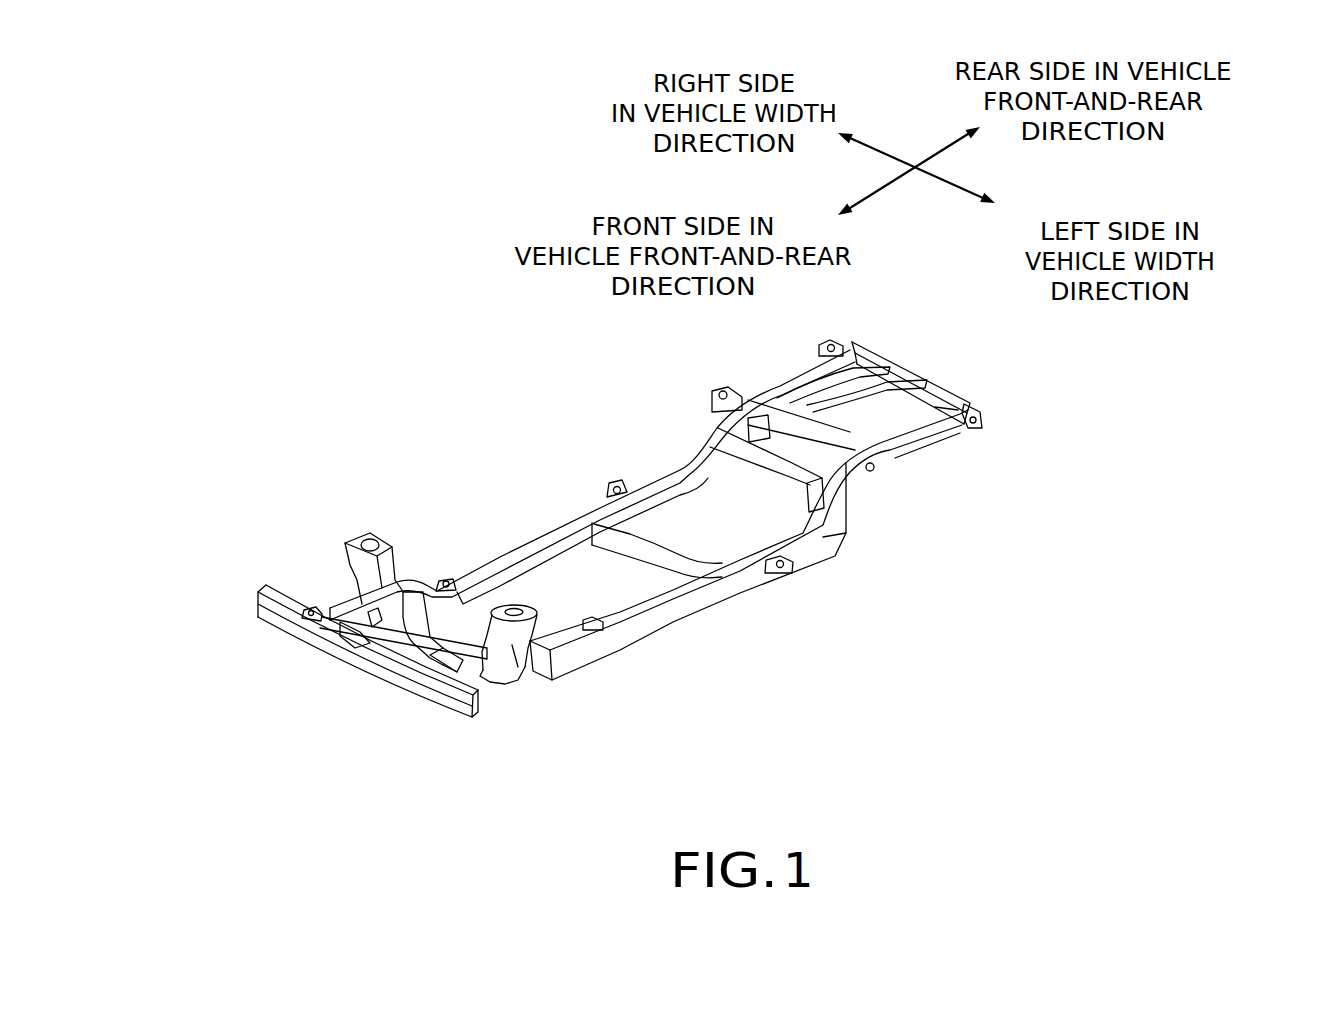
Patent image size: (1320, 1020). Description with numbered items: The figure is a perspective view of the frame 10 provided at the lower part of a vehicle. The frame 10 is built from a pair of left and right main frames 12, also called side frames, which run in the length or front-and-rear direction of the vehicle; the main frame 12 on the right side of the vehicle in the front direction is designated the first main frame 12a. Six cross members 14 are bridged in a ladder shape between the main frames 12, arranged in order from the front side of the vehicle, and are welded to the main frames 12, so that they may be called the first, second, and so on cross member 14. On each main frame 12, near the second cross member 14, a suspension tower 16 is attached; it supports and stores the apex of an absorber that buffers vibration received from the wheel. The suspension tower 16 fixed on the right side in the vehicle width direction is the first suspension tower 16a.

The frame 10 is at (557, 447).
The main frame 12 is at (627, 633).
The first main frame 12a is at (540, 551).
The cross member 14 is at (340, 667).
The suspension tower 16 is at (512, 647).
The first suspension tower 16a is at (358, 565).